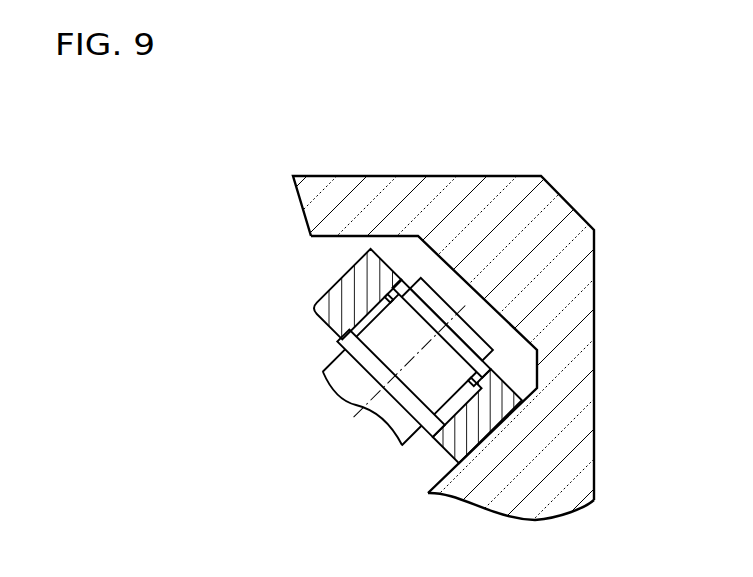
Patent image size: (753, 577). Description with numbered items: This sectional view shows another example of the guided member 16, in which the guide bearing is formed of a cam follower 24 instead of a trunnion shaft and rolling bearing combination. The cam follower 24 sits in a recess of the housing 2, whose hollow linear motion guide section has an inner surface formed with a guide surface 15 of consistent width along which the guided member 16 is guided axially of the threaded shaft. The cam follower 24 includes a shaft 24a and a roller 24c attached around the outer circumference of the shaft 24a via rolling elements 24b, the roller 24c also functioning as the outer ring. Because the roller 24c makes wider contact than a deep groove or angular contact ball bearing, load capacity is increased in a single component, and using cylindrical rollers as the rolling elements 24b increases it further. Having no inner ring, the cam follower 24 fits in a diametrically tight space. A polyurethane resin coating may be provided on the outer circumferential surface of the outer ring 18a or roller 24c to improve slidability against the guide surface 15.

The housing 2 is at (594, 277).
The guide surface 15 is at (431, 491).
The guided member 16 is at (330, 257).
The outer ring 18a is at (442, 455).
The cam follower 24 is at (233, 278).
The shaft 24a is at (340, 383).
The rolling elements 24b is at (363, 330).
The roller 24c is at (348, 292).